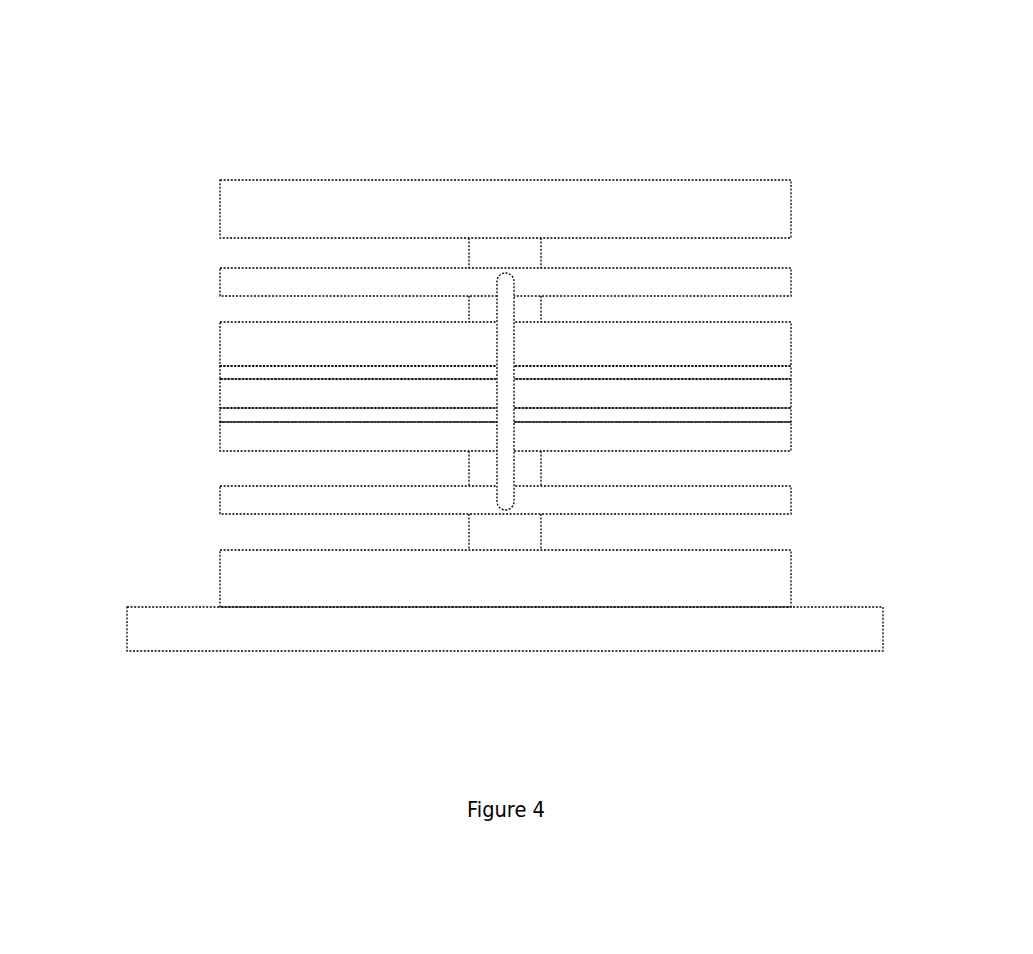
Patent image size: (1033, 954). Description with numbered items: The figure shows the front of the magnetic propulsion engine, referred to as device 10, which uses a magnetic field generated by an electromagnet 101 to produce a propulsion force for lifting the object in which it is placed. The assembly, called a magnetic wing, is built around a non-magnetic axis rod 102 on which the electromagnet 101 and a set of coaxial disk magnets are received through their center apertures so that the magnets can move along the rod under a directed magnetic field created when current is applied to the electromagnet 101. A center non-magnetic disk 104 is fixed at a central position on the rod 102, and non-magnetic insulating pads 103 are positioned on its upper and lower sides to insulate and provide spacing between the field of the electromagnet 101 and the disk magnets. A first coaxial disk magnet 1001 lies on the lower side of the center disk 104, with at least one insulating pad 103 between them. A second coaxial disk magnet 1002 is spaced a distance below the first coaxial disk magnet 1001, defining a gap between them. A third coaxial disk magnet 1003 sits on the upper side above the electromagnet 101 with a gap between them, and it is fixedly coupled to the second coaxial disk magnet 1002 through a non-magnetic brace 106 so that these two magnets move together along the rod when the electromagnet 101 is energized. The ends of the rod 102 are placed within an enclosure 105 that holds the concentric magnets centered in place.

The device 10 is at (241, 65).
The enclosure 105 is at (239, 211).
The third coaxial disk magnet 1003 is at (232, 278).
The non-magnetic axis rod 102 is at (523, 253).
The electromagnet 101 is at (233, 336).
The non-magnetic insulating pads 103 is at (233, 368).
The center non-magnetic disk 104 is at (235, 385).
The first coaxial disk magnet 1001 is at (235, 437).
The second coaxial disk magnet 1002 is at (228, 495).
The non-magnetic brace 106 is at (505, 338).